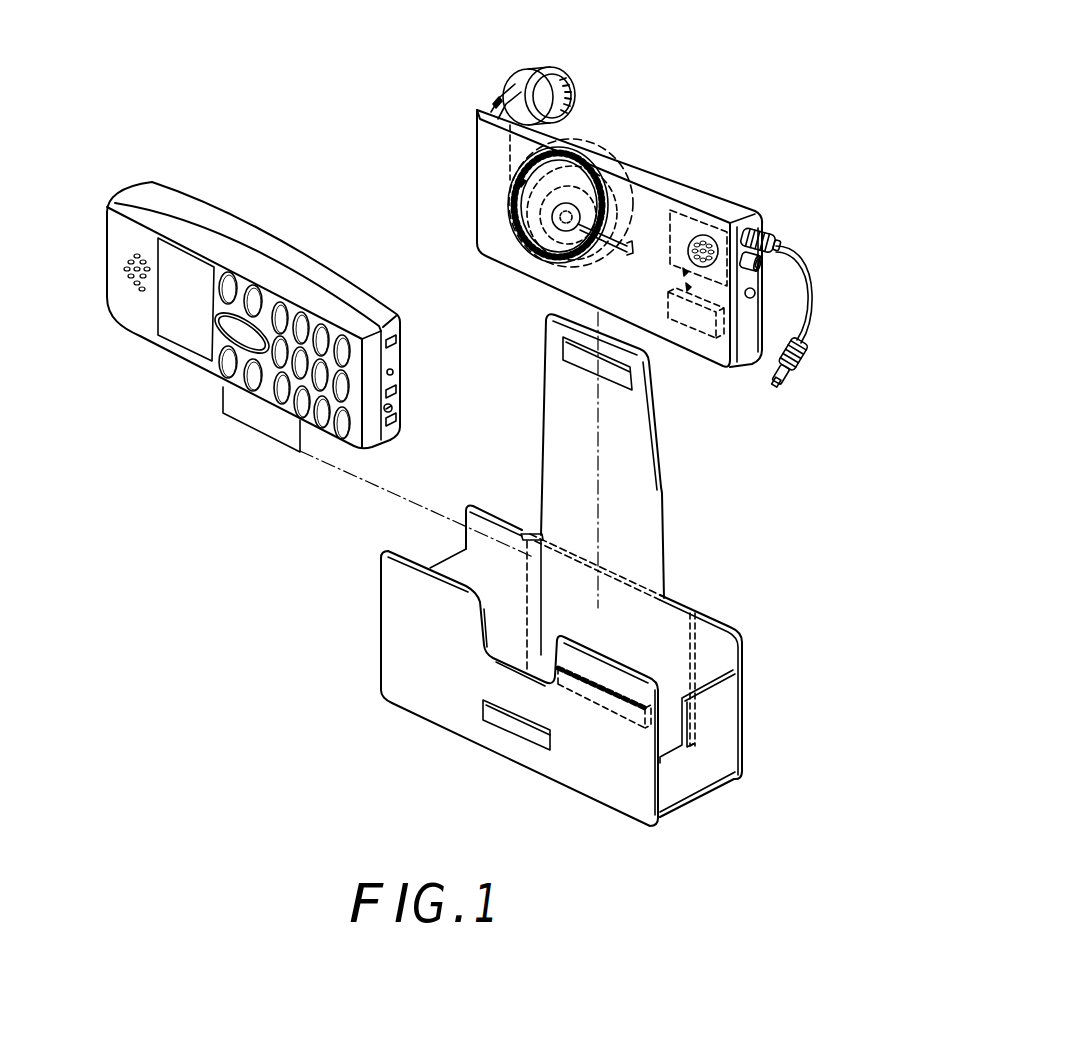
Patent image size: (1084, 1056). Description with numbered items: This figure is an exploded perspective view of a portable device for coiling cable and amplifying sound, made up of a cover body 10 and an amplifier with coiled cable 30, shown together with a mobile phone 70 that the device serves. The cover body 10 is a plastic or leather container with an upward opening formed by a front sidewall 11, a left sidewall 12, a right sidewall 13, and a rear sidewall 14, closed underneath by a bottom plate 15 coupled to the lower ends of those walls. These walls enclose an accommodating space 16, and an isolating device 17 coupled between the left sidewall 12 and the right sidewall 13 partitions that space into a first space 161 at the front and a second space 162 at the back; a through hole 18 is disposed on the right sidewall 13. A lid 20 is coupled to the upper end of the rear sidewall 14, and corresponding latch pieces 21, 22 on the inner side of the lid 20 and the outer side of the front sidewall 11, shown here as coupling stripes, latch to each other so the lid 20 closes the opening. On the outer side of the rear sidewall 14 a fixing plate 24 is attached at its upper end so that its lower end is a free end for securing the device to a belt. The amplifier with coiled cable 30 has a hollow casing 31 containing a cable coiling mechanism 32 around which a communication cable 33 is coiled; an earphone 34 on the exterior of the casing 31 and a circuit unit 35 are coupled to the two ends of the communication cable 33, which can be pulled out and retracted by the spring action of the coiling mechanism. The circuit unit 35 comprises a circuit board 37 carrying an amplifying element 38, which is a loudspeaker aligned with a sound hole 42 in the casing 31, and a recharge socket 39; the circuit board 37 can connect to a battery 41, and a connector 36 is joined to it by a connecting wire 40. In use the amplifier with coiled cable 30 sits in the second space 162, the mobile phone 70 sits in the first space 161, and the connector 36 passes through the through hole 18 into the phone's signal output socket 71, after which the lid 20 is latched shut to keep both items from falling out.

The cover body 10 is at (569, 648).
The front sidewall 11 is at (498, 690).
The left sidewall 12 is at (438, 562).
The right sidewall 13 is at (703, 760).
The rear sidewall 14 is at (742, 632).
The bottom plate 15 is at (683, 805).
The accommodating space 16 is at (649, 655).
The isolating device 17 is at (487, 655).
The through hole 18 is at (677, 725).
The lid 20 is at (614, 460).
The latch piece 21 is at (570, 347).
The latch piece 22 is at (520, 728).
The fixing plate 24 is at (700, 615).
The amplifier with coiled cable 30 is at (664, 212).
The casing 31 is at (607, 140).
The cable coiling mechanism 32 is at (510, 198).
The communication cable 33 is at (510, 220).
The earphone 34 is at (540, 68).
The circuit unit 35 is at (740, 200).
The connector 36 is at (810, 358).
The circuit board 37 is at (693, 218).
The amplifying element 38 is at (767, 217).
The recharge socket 39 is at (740, 334).
The connecting wire 40 is at (814, 290).
The battery 41 is at (698, 348).
The sound hole 42 is at (781, 245).
The mobile phone 70 is at (250, 242).
The signal output socket 71 is at (393, 372).
The first space 161 is at (503, 645).
The second space 162 is at (713, 660).